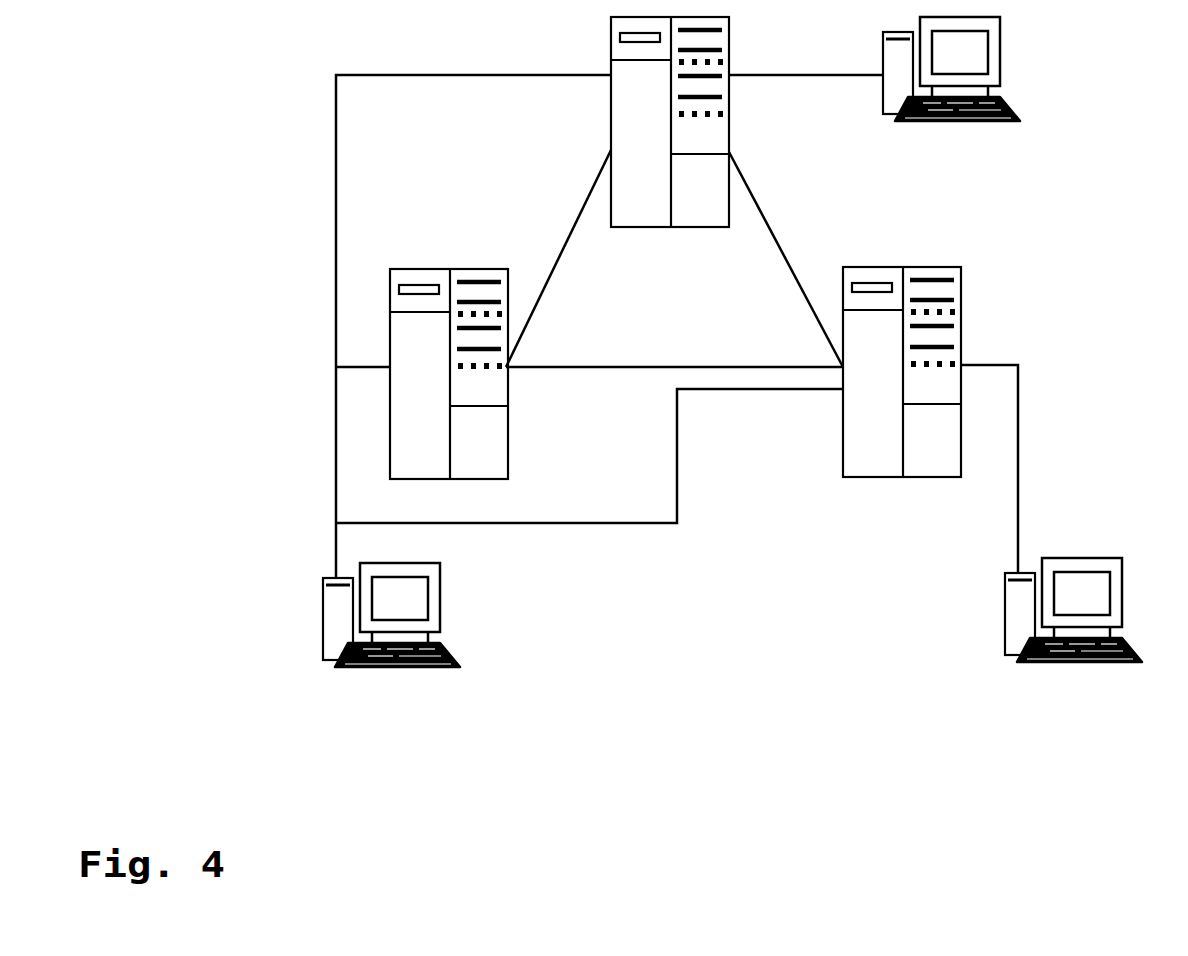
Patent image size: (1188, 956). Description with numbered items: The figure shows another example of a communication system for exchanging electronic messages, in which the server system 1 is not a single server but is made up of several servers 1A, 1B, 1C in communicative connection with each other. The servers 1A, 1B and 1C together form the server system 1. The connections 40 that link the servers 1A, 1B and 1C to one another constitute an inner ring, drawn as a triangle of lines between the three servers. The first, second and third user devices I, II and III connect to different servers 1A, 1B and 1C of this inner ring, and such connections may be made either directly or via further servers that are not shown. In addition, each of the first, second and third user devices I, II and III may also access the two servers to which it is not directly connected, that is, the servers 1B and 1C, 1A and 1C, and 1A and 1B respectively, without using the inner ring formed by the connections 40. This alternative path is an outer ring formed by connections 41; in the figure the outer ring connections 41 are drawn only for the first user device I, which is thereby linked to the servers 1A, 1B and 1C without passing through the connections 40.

The server system 1 is at (900, 211).
The server 1A is at (498, 462).
The server 1B is at (860, 462).
The server 1C is at (620, 120).
The connections 40 is at (560, 256).
The connections 41 is at (335, 248).
The first user device I is at (370, 615).
The second user device II is at (1051, 610).
The third user device III is at (974, 69).